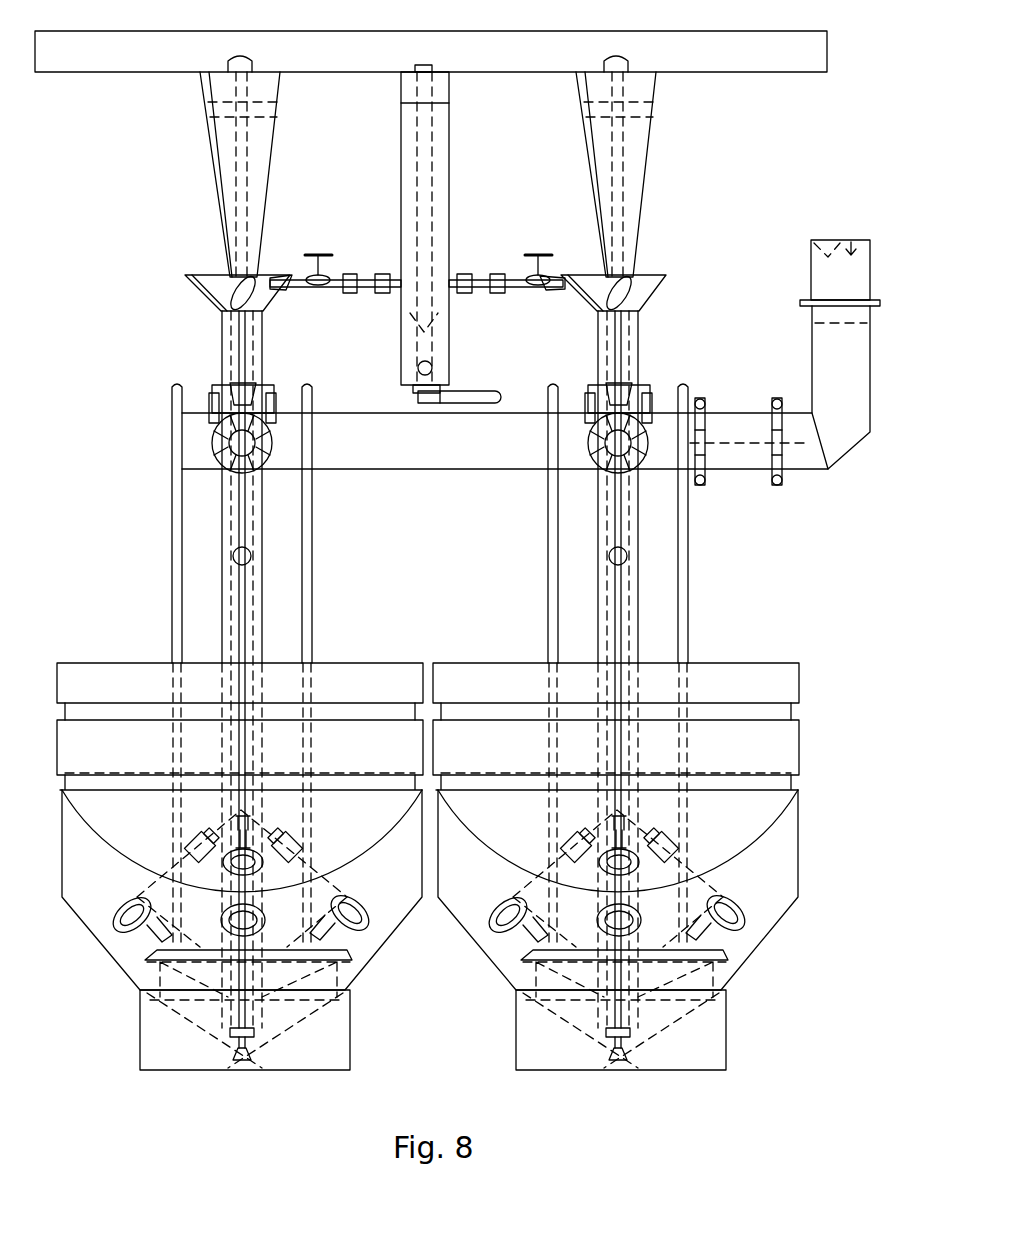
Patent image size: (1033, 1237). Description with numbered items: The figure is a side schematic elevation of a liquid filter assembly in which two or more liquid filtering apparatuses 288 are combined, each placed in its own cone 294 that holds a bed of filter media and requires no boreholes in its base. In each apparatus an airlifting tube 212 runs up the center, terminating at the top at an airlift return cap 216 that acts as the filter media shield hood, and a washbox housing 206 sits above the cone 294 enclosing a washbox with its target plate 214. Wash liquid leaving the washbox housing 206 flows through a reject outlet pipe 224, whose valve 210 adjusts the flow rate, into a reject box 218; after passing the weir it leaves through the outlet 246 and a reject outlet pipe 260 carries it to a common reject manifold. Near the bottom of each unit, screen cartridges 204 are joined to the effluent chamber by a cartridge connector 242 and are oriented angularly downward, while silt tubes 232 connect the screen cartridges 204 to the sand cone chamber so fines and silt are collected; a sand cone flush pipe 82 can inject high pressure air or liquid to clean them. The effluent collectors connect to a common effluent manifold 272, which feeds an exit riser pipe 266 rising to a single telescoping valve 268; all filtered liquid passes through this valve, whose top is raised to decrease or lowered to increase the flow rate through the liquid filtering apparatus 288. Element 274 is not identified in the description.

The sand cone flush pipe 82 is at (172, 407).
The screen cartridge 204 is at (358, 918).
The washbox housing 206 is at (655, 270).
The valve 210 is at (323, 243).
The airlifting tube 212 is at (248, 1062).
The target plate 214 is at (590, 98).
The airlift return cap 216 is at (236, 62).
The reject box 218 is at (418, 100).
The reject outlet pipe 224 is at (470, 276).
The silt tube 232 is at (150, 928).
The cartridge connector 242 is at (660, 880).
The outlet 246 is at (413, 389).
The reject outlet pipe 260 is at (483, 398).
The exit riser pipe 266 is at (825, 358).
The telescoping valve 268 is at (828, 242).
The effluent manifold 272 is at (415, 470).
The discharge box 274 is at (728, 1013).
The liquid filtering apparatus 288 is at (815, 30).
The cone 294 is at (810, 663).